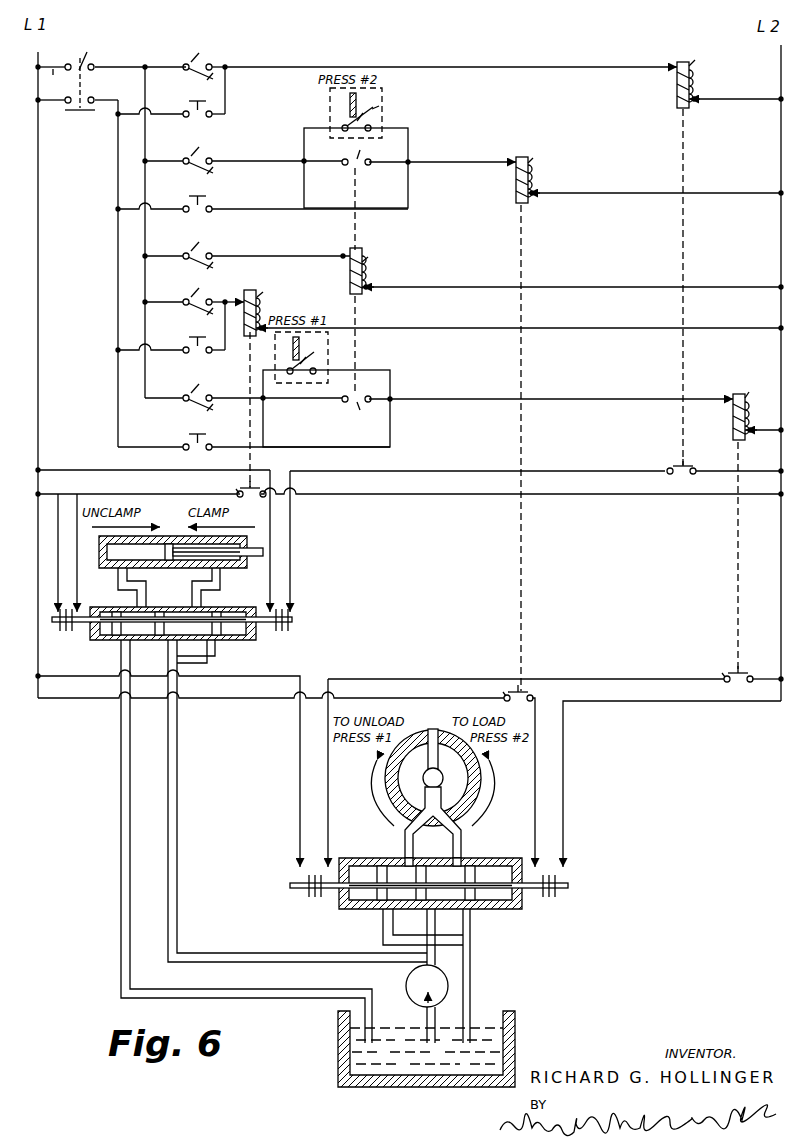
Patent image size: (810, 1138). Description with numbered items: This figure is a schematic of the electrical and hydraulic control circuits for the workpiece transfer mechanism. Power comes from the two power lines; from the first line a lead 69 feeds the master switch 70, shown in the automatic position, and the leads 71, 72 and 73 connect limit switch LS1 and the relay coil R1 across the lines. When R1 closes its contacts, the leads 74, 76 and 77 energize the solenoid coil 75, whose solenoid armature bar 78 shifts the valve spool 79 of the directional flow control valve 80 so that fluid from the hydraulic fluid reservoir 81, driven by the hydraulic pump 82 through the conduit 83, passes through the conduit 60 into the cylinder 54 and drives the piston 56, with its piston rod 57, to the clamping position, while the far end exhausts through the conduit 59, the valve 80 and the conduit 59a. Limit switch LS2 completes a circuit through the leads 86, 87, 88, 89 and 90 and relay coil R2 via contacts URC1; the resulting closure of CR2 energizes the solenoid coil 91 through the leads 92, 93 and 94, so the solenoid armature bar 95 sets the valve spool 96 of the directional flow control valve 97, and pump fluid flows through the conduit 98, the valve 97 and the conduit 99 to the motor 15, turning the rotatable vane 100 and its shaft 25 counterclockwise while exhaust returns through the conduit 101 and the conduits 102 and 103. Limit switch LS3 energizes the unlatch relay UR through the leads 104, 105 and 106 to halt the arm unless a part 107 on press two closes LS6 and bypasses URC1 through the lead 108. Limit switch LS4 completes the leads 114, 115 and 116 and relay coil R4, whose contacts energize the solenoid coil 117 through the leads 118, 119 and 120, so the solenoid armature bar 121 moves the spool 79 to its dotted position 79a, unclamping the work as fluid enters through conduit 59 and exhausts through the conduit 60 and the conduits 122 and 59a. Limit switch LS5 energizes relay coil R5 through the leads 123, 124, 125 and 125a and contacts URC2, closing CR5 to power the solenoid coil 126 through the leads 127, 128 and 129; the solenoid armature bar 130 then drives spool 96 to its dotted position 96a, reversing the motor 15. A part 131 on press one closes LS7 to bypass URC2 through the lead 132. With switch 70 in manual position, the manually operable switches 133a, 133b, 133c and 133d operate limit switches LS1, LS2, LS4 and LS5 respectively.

The motor 15 is at (393, 760).
The shaft 25 is at (424, 776).
The cylinder 54 is at (236, 569).
The piston 56 is at (165, 556).
The piston rod 57 is at (259, 550).
The conduit 59 is at (118, 581).
The conduit 59a is at (121, 755).
The conduit 60 is at (220, 585).
The lead 69 is at (53, 79).
The master switch 70 is at (92, 44).
The lead 71 is at (145, 67).
The lead 72 is at (283, 66).
The lead 73 is at (722, 99).
The lead 74 is at (100, 472).
The solenoid coil 75 is at (270, 630).
The lead 76 is at (407, 473).
The lead 77 is at (706, 474).
The solenoid armature bar 78 is at (294, 627).
The valve spool 79 is at (215, 611).
The dotted position of valve spool 79a is at (240, 613).
The directional flow control valve 80 is at (221, 642).
The hydraulic fluid reservoir 81 is at (345, 1038).
The hydraulic pump 82 is at (408, 985).
The conduit 83 is at (178, 791).
The lead 86 is at (145, 128).
The lead 87 is at (148, 163).
The lead 88 is at (240, 161).
The lead 89 is at (462, 162).
The lead 90 is at (630, 193).
The solenoid coil 91 is at (553, 896).
The lead 92 is at (69, 700).
The lead 93 is at (535, 798).
The lead 94 is at (644, 701).
The solenoid armature bar 95 is at (570, 886).
The valve spool 96 is at (482, 866).
The dotted position of valve spool 96a is at (500, 866).
The directional flow control valve 97 is at (501, 910).
The conduit 98 is at (434, 922).
The conduit 99 is at (449, 846).
The rotatable vane 100 is at (437, 760).
The conduit 101 is at (417, 846).
The conduit 102 is at (385, 926).
The conduit 103 is at (471, 991).
The lead 104 is at (159, 255).
The lead 105 is at (262, 256).
The lead 106 is at (471, 288).
The part 107 is at (350, 101).
The lead 108 is at (409, 132).
The lead 114 is at (158, 302).
The lead 115 is at (217, 302).
The lead 116 is at (445, 329).
The solenoid coil 117 is at (72, 632).
The lead 118 is at (57, 497).
The lead 119 is at (153, 497).
The lead 120 is at (446, 497).
The solenoid armature bar 121 is at (56, 630).
The conduit 122 is at (216, 662).
The lead 123 is at (158, 398).
The lead 124 is at (217, 398).
The lead 125 is at (457, 399).
The lead 125a is at (756, 433).
The solenoid coil 126 is at (308, 896).
The lead 127 is at (66, 679).
The lead 128 is at (375, 680).
The lead 129 is at (760, 680).
The solenoid armature bar 130 is at (300, 882).
The part 131 is at (299, 346).
The lead 132 is at (379, 370).
The manually operable switch 133a is at (171, 99).
The manually operable switch 133b is at (263, 198).
The manually operable switch 133c is at (171, 337).
The manually operable switch 133d is at (254, 435).